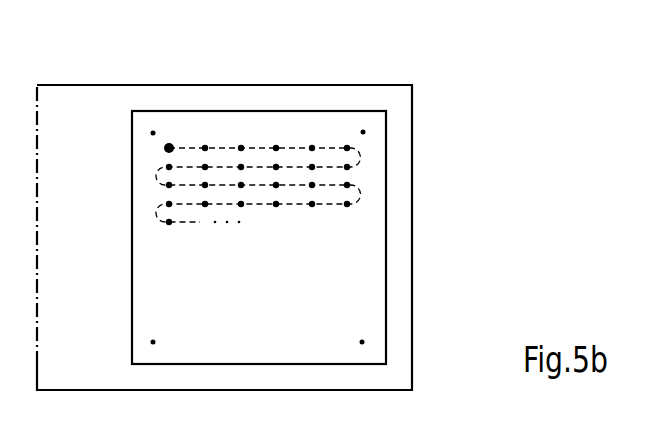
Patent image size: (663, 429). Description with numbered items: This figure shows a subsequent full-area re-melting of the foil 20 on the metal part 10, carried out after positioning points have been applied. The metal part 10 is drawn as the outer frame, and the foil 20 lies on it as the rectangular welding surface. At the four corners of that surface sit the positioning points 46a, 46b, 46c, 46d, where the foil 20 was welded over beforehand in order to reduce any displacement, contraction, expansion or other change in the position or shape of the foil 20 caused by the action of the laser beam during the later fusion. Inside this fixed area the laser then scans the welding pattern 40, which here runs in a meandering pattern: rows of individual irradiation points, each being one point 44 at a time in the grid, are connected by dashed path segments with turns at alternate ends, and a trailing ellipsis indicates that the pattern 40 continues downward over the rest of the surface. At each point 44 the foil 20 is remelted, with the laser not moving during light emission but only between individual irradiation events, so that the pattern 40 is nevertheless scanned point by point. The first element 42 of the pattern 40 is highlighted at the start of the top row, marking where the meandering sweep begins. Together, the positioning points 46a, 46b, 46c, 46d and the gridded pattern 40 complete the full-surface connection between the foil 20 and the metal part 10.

The metal part 10 is at (88, 108).
The foil 20 is at (357, 262).
The welding pattern 40 is at (224, 147).
The first sensor element 42 is at (170, 143).
The point 44 is at (276, 147).
The positioning point 46a is at (150, 135).
The positioning point 46b is at (366, 134).
The positioning point 46c is at (365, 341).
The positioning point 46d is at (150, 340).